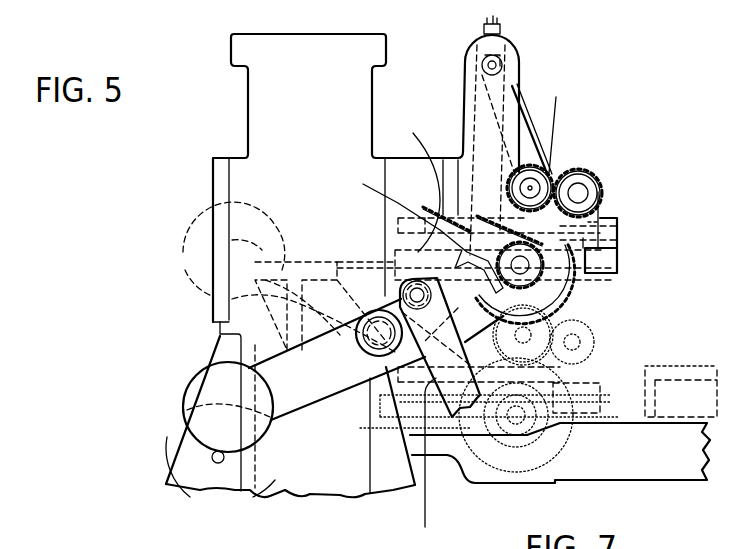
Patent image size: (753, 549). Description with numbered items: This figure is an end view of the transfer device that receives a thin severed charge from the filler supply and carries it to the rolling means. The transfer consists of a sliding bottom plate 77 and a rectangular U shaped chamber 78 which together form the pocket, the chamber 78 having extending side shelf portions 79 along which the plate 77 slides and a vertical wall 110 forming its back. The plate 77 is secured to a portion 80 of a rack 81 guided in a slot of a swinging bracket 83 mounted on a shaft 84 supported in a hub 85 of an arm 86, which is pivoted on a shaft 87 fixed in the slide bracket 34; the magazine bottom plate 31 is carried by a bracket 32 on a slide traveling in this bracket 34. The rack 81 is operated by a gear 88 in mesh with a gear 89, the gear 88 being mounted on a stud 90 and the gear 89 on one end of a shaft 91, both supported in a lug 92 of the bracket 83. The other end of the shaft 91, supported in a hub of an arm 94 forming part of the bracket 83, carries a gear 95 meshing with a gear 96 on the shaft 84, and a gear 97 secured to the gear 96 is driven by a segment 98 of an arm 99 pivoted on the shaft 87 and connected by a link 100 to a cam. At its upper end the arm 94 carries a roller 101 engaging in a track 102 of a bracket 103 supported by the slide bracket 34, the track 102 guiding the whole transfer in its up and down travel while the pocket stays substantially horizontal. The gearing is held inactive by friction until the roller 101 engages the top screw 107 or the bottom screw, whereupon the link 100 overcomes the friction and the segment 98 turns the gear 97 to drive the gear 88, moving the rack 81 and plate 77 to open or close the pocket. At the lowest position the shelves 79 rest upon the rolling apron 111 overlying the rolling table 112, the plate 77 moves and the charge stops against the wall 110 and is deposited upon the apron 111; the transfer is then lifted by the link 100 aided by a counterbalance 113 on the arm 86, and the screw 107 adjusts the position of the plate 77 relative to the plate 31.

The slide bracket 34 is at (260, 107).
The top screw 107 is at (484, 26).
The bracket 103 is at (465, 70).
The roller 101 is at (505, 50).
The arm 94 is at (520, 108).
The track 102 is at (472, 110).
The gear 95 is at (558, 125).
The segment 98 is at (420, 184).
The gear 89 is at (550, 172).
The shaft 91 is at (535, 186).
The lug 92 is at (575, 180).
The gear 88 is at (594, 190).
The stud 90 is at (582, 193).
The arm 99 is at (420, 231).
The counterbalance 113 is at (185, 386).
The vertical wall 110 is at (482, 215).
The rack 81 is at (606, 218).
The swinging bracket 83 is at (605, 223).
The gear 97 is at (612, 240).
The bottom plate 31 is at (232, 240).
The arm 86 is at (287, 252).
The sliding bottom plate 77 is at (395, 262).
The rectangular U shaped chamber 78 is at (618, 257).
The bracket 32 is at (225, 300).
The side shelf portions 79 is at (600, 275).
The portion of rack 80 is at (568, 286).
The gear 96 is at (558, 490).
The hub 85 is at (590, 312).
The shaft 87 is at (356, 348).
The shaft 84 is at (444, 347).
The rolling apron 111 is at (597, 422).
The rolling table 112 is at (636, 470).
The link 100 is at (424, 463).